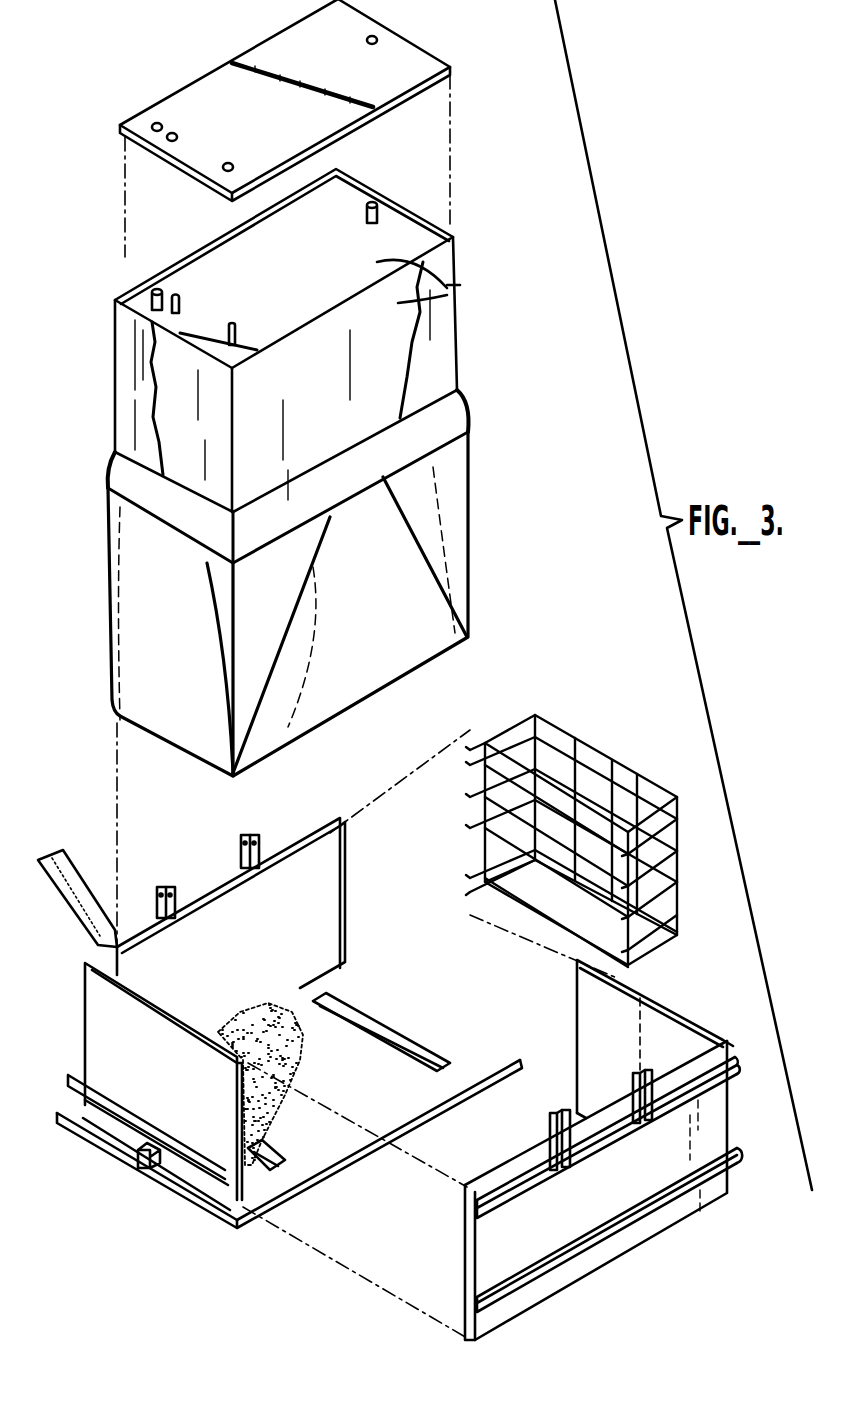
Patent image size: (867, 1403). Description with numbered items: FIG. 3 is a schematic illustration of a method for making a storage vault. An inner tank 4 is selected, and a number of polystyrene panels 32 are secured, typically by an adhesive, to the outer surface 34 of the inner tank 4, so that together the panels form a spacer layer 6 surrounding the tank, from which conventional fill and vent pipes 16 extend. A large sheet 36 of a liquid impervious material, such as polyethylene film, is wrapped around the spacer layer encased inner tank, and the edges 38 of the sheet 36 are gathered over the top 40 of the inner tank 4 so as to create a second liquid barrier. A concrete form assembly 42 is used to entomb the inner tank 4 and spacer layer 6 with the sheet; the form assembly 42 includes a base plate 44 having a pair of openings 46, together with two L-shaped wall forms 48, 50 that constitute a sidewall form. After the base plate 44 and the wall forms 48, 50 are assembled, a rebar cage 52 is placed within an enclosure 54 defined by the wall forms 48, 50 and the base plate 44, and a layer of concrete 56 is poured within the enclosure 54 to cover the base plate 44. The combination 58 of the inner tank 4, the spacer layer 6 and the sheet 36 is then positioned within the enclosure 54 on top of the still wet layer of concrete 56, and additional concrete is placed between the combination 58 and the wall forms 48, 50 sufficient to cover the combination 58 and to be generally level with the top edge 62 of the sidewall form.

The inner tank 4 is at (301, 337).
The spacer layer 6 is at (374, 180).
The fill and vent pipes 16 is at (181, 299).
The polystyrene panels 32 is at (407, 53).
The outer surface 34 is at (452, 284).
The sheet 36 is at (470, 588).
The edges 38 is at (455, 424).
The top 40 is at (425, 237).
The concrete form assembly 42 is at (73, 1023).
The base plate 44 is at (303, 1187).
The openings 46 is at (400, 1030).
The L-shaped wall form 48 is at (715, 1138).
The L-shaped wall form 50 is at (92, 988).
The rebar cage 52 is at (607, 753).
The enclosure 54 is at (191, 893).
The layer of concrete 56 is at (277, 1047).
The combination 58 is at (505, 493).
The top edge 62 is at (310, 830).